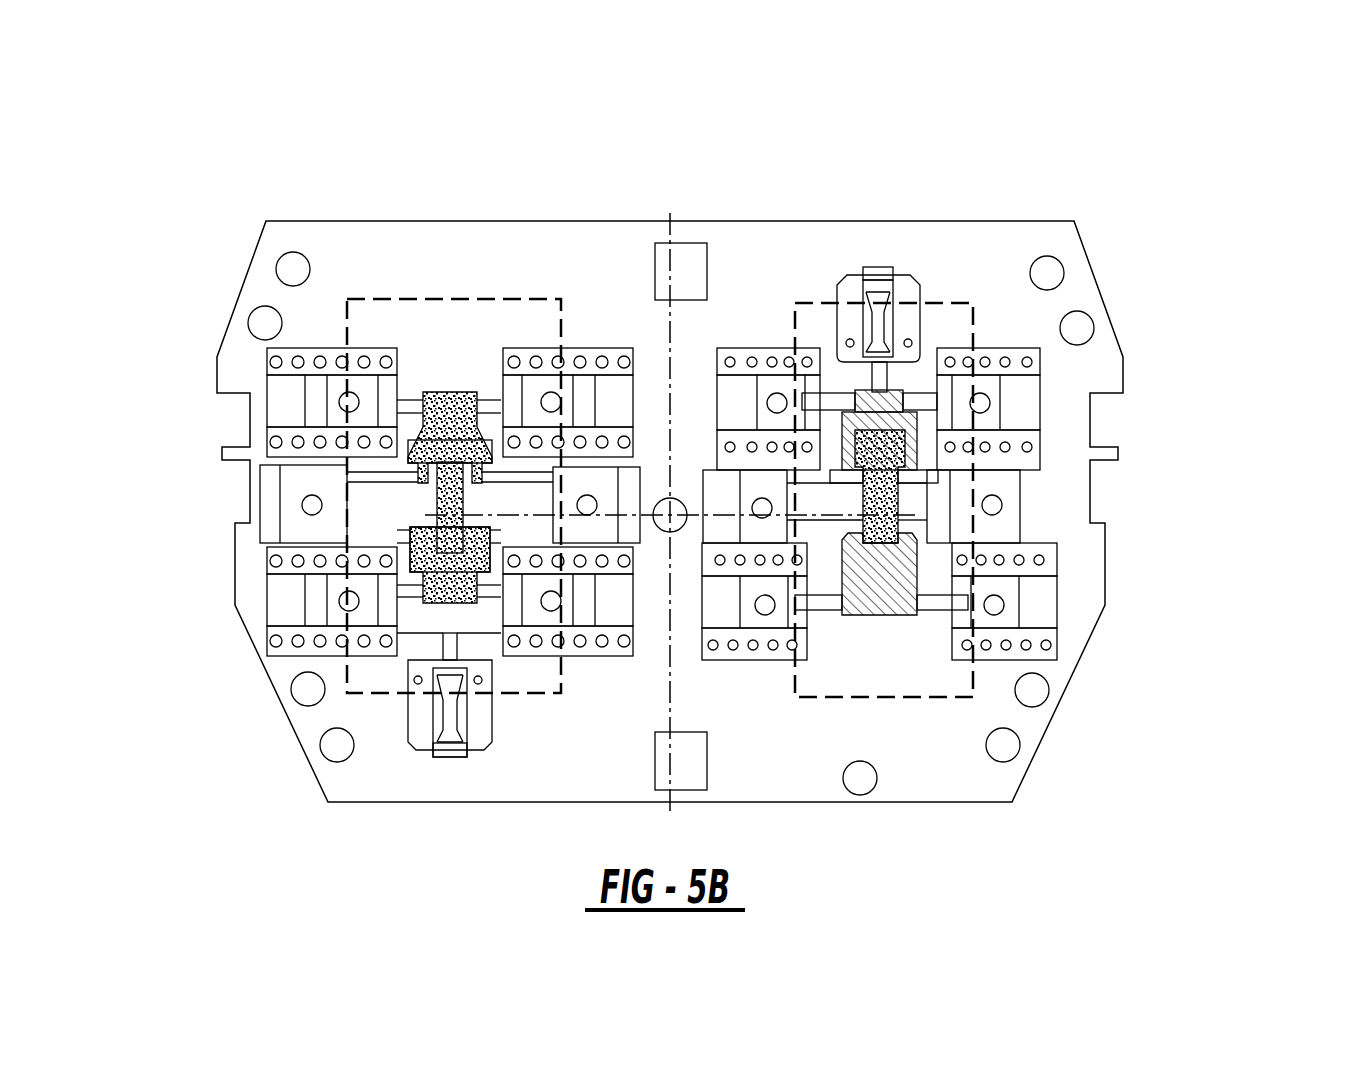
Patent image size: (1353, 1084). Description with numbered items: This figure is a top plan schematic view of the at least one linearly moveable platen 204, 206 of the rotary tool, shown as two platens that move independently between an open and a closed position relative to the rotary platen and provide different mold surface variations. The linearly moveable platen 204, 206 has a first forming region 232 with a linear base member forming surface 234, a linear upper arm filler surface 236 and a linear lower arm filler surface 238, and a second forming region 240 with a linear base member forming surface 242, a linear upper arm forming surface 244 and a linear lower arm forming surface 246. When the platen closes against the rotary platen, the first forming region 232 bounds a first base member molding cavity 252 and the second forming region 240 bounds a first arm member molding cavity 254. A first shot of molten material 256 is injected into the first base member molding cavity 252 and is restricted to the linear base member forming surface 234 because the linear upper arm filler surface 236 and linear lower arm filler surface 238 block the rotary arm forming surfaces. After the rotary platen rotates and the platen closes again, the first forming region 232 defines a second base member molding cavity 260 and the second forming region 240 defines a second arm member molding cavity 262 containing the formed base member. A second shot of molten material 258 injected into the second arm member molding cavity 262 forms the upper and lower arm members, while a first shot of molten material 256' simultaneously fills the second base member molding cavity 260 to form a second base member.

The linearly moveable platen 204 is at (625, 448).
The linearly moveable platen 206 is at (208, 185).
The first forming region 232 is at (788, 316).
The linear base member forming surface 234 is at (890, 551).
The linear upper arm filler surface 236 is at (886, 405).
The linear lower arm filler surface 238 is at (890, 603).
The second forming region 240 is at (441, 348).
The linear base member forming surface 242 is at (445, 493).
The linear upper arm forming surface 244 is at (445, 422).
The linear lower arm forming surface 246 is at (433, 565).
The first base member molding cavity 252 is at (961, 416).
The first arm member molding cavity 254 is at (417, 407).
The first shot of molten material 256 is at (1079, 456).
The first shot of molten material 256' is at (1079, 456).
The second shot of molten material 258 is at (430, 447).
The second base member molding cavity 260 is at (940, 296).
The second arm member molding cavity 262 is at (379, 296).